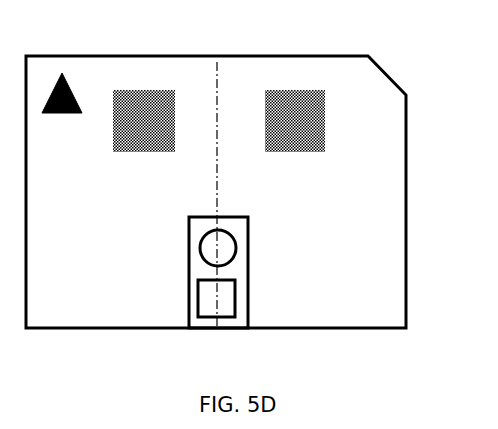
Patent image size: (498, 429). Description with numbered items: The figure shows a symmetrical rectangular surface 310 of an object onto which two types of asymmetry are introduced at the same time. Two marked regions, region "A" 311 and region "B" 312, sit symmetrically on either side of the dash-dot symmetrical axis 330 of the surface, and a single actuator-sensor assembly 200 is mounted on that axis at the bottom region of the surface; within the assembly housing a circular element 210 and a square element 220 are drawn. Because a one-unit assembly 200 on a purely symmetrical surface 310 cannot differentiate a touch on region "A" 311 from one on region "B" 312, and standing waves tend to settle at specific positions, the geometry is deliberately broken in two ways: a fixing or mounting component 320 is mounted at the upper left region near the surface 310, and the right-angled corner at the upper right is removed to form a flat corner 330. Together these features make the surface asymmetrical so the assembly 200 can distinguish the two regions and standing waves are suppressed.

The actuator-sensor assembly 200 is at (188, 272).
The camera lens 210 is at (236, 253).
The sensor window 220 is at (235, 309).
The surface 310 is at (271, 72).
The region "A" 311 is at (141, 158).
The region "B" 312 is at (303, 161).
The fixing component 320 is at (68, 83).
The flat corner 330 is at (215, 98).